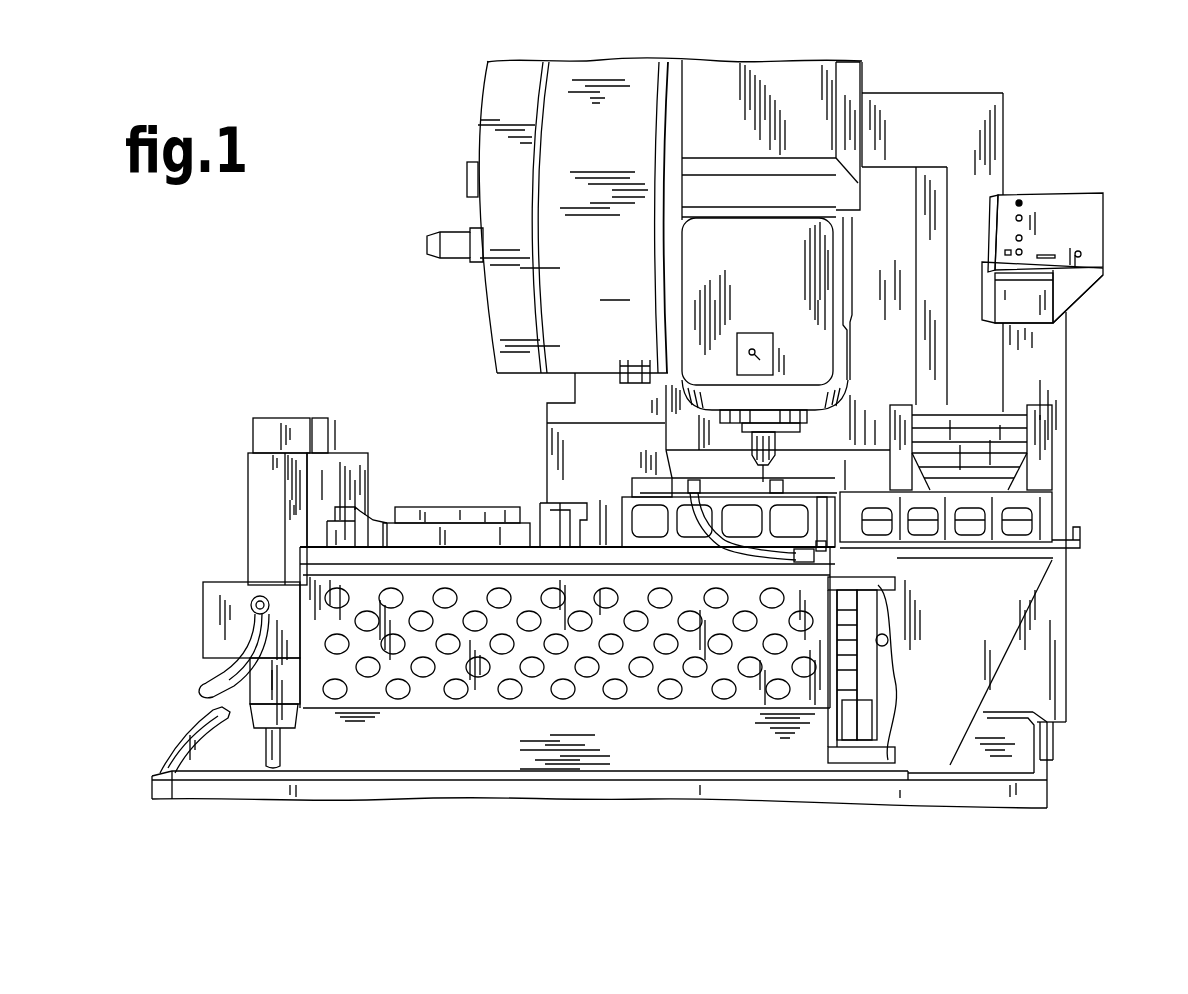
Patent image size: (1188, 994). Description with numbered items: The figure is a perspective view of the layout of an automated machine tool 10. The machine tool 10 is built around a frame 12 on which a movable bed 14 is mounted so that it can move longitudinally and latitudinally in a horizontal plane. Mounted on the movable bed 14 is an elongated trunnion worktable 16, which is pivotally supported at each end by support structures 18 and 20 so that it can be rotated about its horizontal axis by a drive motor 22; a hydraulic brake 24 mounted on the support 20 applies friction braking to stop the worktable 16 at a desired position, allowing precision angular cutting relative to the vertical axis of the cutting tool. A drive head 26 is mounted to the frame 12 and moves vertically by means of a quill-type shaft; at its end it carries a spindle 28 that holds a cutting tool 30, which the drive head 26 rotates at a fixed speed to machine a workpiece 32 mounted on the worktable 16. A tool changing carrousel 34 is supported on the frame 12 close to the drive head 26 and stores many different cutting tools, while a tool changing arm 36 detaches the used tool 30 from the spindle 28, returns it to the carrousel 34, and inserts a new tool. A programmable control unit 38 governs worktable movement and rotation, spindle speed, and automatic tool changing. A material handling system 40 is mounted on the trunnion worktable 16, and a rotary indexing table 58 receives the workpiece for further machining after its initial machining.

The automated machine tool 10 is at (283, 316).
The frame 12 is at (1045, 757).
The movable bed 14 is at (408, 775).
The trunnion worktable 16 is at (318, 657).
The support structure 18 is at (255, 492).
The support structure 20 is at (862, 650).
The drive motor 22 is at (210, 624).
The hydraulic brake 24 is at (853, 660).
The drive head 26 is at (747, 266).
The spindle 28 is at (774, 447).
The cutting tool 30 is at (765, 474).
The workpiece 32 is at (633, 480).
The tool changing carrousel 34 is at (620, 68).
The tool changing arm 36 is at (622, 380).
The programmable control unit 38 is at (1107, 210).
The material handling system 40 is at (1043, 517).
The rotary indexing table 58 is at (437, 508).